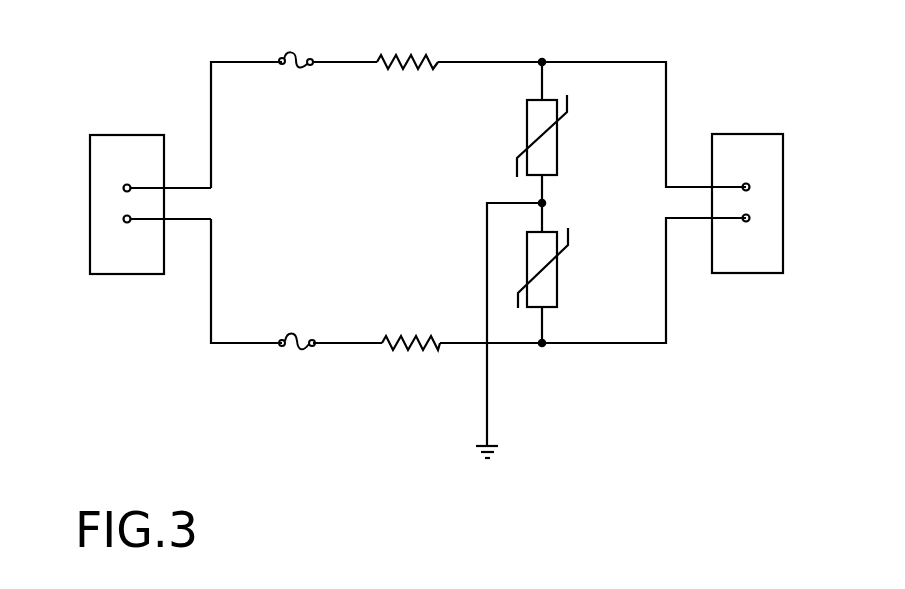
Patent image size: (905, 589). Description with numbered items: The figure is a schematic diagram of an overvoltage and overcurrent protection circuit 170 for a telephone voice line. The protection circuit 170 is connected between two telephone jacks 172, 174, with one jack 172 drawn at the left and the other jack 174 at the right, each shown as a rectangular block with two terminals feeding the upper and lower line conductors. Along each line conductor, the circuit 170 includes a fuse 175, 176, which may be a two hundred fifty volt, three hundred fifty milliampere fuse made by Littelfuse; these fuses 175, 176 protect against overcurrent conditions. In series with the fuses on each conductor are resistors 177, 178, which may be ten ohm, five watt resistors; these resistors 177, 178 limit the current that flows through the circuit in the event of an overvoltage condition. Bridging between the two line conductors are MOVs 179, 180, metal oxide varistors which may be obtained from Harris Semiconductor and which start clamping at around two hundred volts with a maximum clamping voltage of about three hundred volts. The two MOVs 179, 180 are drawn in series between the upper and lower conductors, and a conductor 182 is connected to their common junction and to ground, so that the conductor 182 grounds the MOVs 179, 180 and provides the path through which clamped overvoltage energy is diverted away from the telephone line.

The overvoltage and overcurrent protection circuit 170 is at (738, 73).
The RJ-11 jack 172 is at (103, 258).
The RJ-11 jack 174 is at (770, 243).
The fuse 175 is at (299, 70).
The fuse 176 is at (292, 334).
The resistor 177 is at (428, 57).
The resistor 178 is at (391, 351).
The MOV 179 is at (527, 133).
The MOV 180 is at (527, 273).
The conductor 182 is at (487, 408).